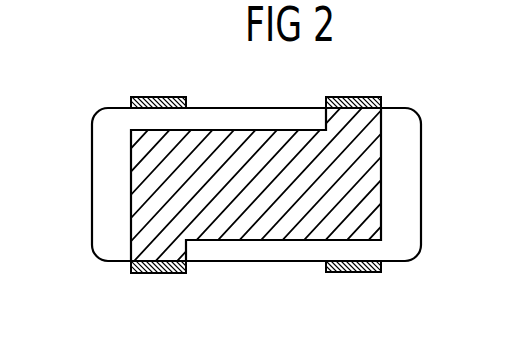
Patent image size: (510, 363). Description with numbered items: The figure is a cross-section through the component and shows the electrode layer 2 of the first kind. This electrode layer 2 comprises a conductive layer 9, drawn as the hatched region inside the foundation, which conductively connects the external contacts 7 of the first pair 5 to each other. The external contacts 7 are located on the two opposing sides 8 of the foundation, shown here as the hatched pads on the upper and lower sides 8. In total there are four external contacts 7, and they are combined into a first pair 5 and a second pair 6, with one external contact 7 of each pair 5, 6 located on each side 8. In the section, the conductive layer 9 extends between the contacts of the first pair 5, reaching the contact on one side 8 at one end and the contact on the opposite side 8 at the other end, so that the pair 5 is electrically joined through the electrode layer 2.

The electrode layer of the first kind 2 is at (251, 189).
The first pair of external contacts 5 is at (398, 166).
The second pair of external contacts 6 is at (270, 187).
The external contact 7 is at (129, 102).
The side of the foundation 8 is at (238, 107).
The conductive layer 9 is at (143, 190).